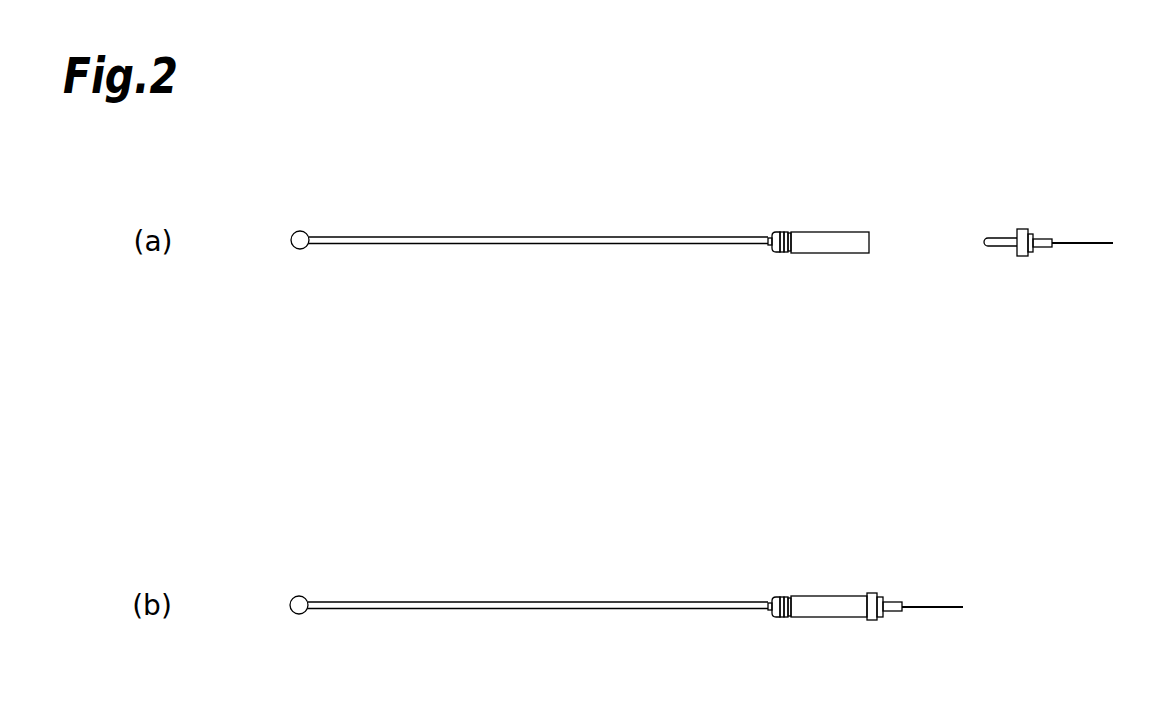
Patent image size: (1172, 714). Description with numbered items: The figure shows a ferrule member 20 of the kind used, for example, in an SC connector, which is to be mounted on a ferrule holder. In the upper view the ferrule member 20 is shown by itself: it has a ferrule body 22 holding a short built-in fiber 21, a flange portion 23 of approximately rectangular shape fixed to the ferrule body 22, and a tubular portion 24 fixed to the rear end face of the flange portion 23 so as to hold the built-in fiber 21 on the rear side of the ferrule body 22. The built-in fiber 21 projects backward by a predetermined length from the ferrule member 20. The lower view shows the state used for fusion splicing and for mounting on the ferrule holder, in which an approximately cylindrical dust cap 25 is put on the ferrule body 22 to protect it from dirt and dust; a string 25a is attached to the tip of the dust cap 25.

The ferrule member 20 is at (1035, 218).
The built-in fiber 21 is at (1100, 241).
The ferrule body 22 is at (998, 248).
The flange portion 23 is at (1022, 257).
The tubular portion 24 is at (1042, 248).
The dust cap 25 is at (848, 220).
The string 25a is at (570, 240).